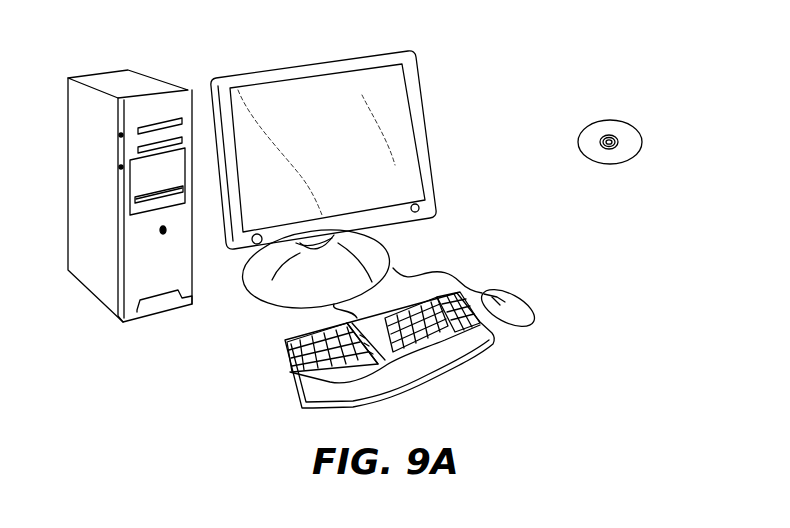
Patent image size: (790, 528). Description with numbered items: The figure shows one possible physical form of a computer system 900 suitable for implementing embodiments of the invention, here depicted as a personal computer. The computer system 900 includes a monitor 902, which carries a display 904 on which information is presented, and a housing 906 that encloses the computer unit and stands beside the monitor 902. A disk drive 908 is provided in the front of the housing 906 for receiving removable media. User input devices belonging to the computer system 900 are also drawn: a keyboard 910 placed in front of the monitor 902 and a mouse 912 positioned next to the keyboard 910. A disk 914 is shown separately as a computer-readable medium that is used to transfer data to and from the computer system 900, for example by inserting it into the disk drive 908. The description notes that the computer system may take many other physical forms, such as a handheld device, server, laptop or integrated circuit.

The computer system 900 is at (539, 37).
The monitor 902 is at (430, 147).
The display 904 is at (388, 85).
The housing 906 is at (118, 80).
The disk drive slot 908 is at (177, 193).
The keyboard 910 is at (290, 381).
The mouse 912 is at (527, 302).
The disk 914 is at (626, 118).